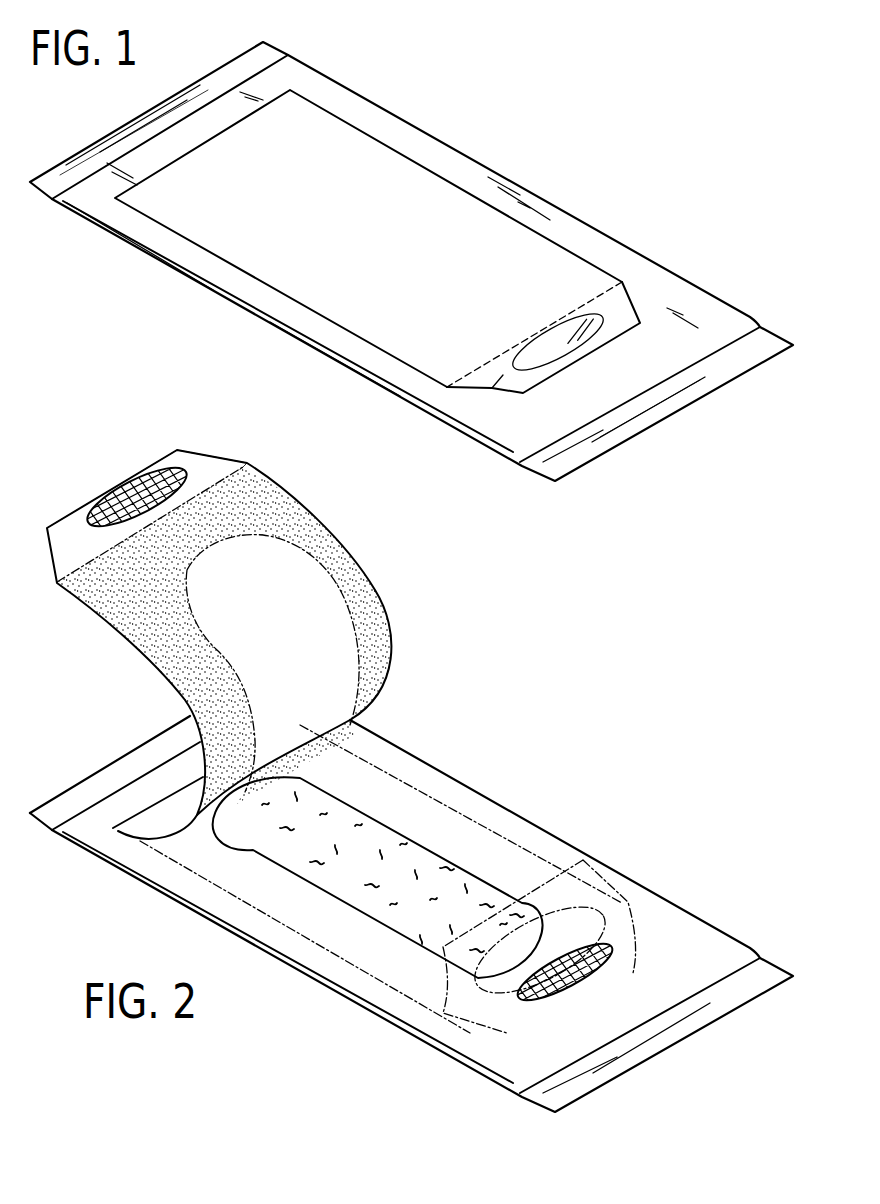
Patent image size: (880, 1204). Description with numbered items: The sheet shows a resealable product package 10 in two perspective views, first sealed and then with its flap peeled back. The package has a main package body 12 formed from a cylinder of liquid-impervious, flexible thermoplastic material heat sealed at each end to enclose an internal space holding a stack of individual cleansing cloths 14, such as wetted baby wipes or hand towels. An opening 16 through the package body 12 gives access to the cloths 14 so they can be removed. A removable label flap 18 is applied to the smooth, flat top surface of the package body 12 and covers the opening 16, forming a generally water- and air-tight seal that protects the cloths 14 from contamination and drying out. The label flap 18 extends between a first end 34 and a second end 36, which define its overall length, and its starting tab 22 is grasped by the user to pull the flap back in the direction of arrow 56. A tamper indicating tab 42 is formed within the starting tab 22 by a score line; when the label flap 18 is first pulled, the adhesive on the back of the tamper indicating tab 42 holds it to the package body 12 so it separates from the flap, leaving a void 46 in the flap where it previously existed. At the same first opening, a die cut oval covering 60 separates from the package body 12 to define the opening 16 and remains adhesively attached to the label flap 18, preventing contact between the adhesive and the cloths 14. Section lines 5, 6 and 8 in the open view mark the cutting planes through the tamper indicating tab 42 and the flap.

In FIG. 1, the resealable product package 10 is at (436, 104).
In FIG. 1, the main package body 12 is at (633, 263).
In FIG. 2, the main package body 12 is at (663, 920).
In FIG. 2, the cleansing cloths 14 is at (368, 842).
In FIG. 2, the opening 16 is at (343, 905).
In FIG. 1, the label flap 18 is at (354, 165).
In FIG. 2, the label flap 18 is at (261, 613).
In FIG. 2, the starting tab 22 is at (200, 470).
In FIG. 1, the first end 34 is at (603, 348).
In FIG. 1, the second end 36 is at (183, 152).
In FIG. 1, the tamper indicating tab 42 is at (545, 345).
In FIG. 2, the tamper indicating tab 42 is at (605, 956).
In FIG. 2, the void 46 is at (170, 472).
In FIG. 2, the arrow 56 is at (455, 1047).
In FIG. 2, the oval covering 60 is at (327, 652).
In FIG. 2, the section line 5- 5 is at (147, 472).
In FIG. 2, the section line 6- 6 is at (575, 948).
In FIG. 2, the section line 8- 8 is at (600, 903).